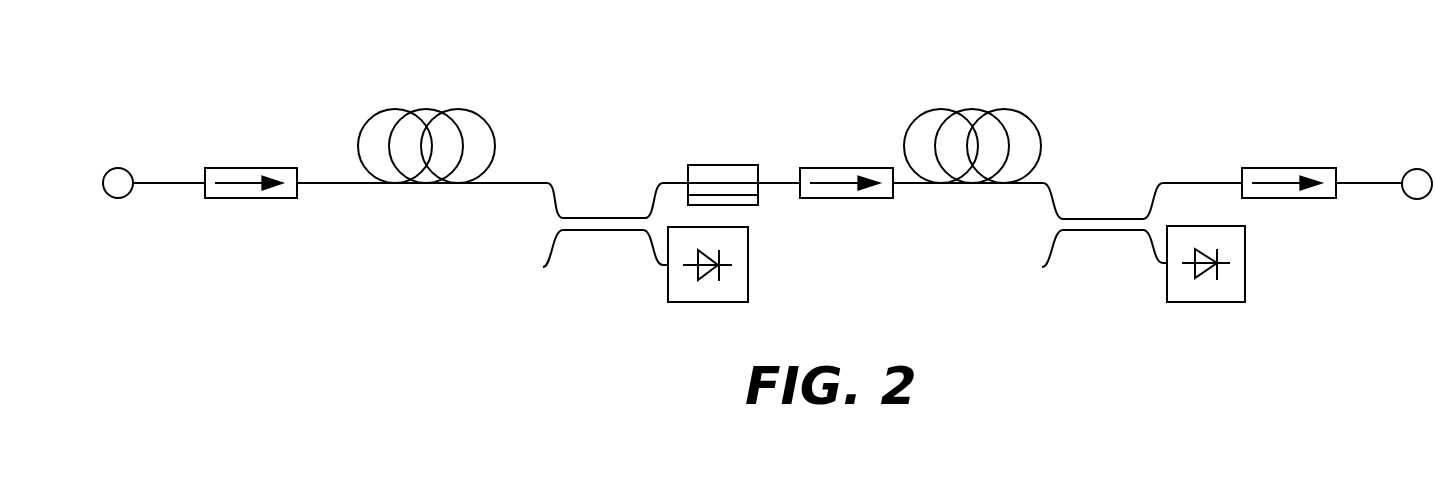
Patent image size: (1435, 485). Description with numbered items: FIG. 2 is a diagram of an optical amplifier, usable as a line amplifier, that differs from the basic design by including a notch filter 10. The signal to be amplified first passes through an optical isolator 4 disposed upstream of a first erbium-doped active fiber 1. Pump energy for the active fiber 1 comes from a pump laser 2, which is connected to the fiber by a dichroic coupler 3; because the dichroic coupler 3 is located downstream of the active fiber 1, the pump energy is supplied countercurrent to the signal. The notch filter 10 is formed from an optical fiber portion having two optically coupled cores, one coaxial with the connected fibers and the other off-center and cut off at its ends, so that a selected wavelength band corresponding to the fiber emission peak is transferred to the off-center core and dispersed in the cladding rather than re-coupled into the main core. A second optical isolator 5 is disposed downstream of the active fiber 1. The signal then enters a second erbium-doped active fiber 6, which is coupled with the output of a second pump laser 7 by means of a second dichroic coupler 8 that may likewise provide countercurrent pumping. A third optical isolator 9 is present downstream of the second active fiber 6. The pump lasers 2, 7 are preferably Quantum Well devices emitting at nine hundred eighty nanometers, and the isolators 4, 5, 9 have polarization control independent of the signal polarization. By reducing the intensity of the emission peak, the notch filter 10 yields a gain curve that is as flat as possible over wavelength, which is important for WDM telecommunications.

The erbium-doped active fiber 1 is at (463, 108).
The pump laser 2 is at (748, 253).
The dichroic coupler 3 is at (600, 218).
The optical isolator 4 is at (242, 168).
The second optical isolator 5 is at (830, 168).
The second erbium-doped active fiber 6 is at (1033, 120).
The pump laser 7 is at (1245, 252).
The dichroic coupler 8 is at (1102, 232).
The third optical isolator 9 is at (1277, 168).
The notch filter 10 is at (712, 165).